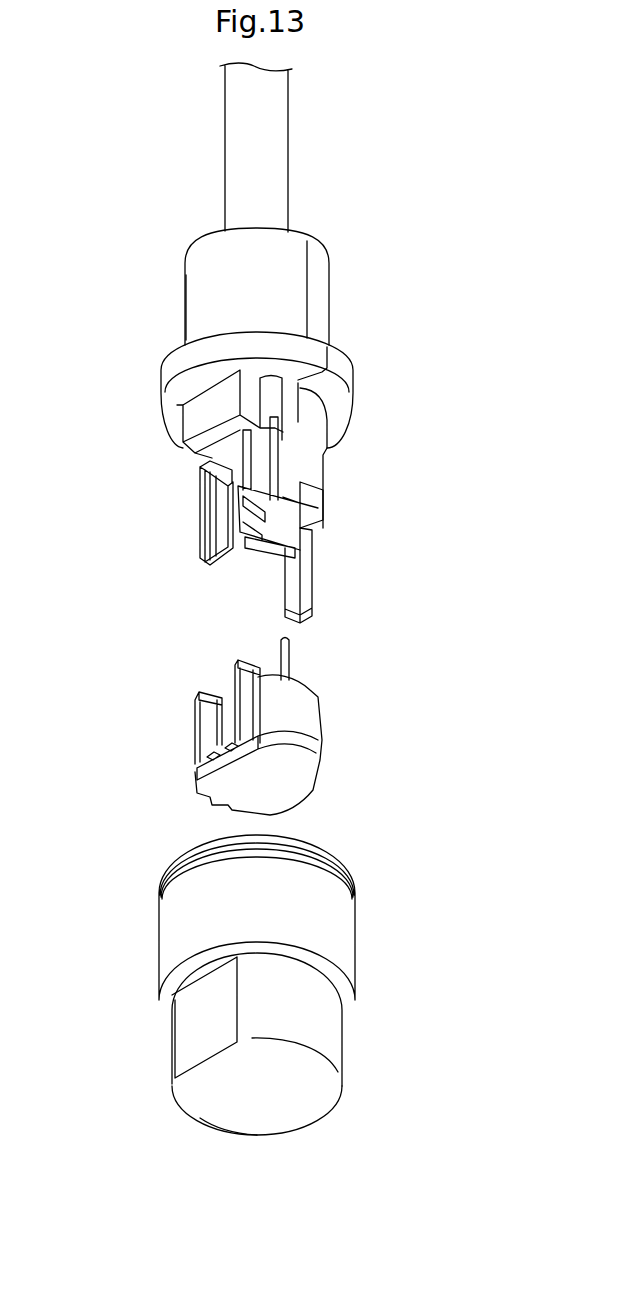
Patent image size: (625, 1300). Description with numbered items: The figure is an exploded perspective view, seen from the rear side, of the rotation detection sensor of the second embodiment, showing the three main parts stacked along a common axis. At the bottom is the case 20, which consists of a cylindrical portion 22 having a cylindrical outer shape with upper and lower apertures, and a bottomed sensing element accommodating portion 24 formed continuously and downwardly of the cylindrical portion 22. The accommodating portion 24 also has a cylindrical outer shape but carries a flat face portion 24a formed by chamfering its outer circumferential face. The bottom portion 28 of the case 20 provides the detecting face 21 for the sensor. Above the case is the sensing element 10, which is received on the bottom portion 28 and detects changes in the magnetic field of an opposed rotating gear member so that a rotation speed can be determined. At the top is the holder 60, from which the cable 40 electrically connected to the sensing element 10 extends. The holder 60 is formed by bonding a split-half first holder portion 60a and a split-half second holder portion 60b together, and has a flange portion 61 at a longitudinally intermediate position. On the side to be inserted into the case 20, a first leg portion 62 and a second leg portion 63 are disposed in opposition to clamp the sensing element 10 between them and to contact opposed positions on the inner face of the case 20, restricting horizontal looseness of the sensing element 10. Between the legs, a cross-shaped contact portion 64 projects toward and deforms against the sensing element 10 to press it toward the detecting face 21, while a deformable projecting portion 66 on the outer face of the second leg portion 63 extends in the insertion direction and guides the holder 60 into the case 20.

The cable 40 is at (290, 128).
The holder 60 is at (186, 241).
The first holder portion 60a is at (329, 300).
The second holder portion 60b is at (185, 305).
The flange portion 61 is at (163, 393).
The first leg portion 62 is at (308, 583).
The second leg portion 63 is at (205, 547).
The contact portion 64 is at (272, 553).
The projecting portion 66 is at (222, 528).
The sensing element 10 is at (322, 723).
The case 20 is at (236, 1014).
The detecting face 21 is at (302, 1095).
The cylindrical portion 22 is at (178, 913).
The sensing element accommodating portion 24 is at (342, 1043).
The flat face portion 24a is at (190, 1040).
The bottom portion 28 is at (223, 1107).